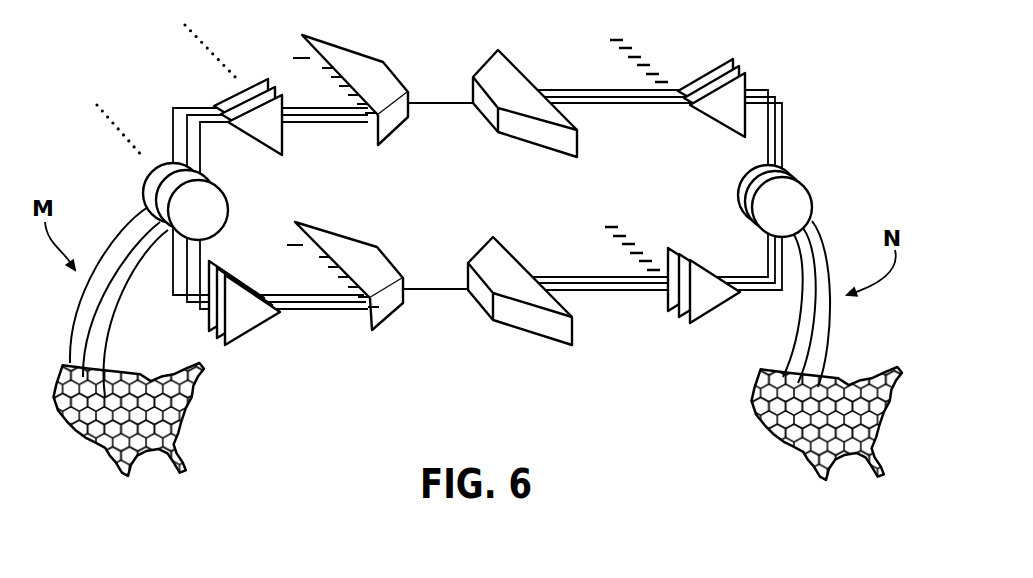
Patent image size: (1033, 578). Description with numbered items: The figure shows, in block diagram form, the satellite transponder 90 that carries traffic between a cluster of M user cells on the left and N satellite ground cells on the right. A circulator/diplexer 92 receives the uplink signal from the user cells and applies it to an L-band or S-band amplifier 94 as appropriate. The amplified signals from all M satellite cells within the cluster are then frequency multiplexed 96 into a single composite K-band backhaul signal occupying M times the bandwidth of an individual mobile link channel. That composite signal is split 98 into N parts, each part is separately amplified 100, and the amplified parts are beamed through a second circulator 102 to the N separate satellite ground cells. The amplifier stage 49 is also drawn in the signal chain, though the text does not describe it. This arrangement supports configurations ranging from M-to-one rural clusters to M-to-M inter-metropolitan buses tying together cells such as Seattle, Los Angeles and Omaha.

The optical amplifier 49 is at (267, 67).
The satellite transponder 90 is at (793, 85).
The circulator/diplexer 92 is at (228, 208).
The L-band or S-band amplifier 94 is at (243, 333).
The frequency multiplexer 96 is at (375, 330).
The splitter 98 is at (507, 247).
The amplifier 100 is at (705, 318).
The second circulator 102 is at (752, 210).